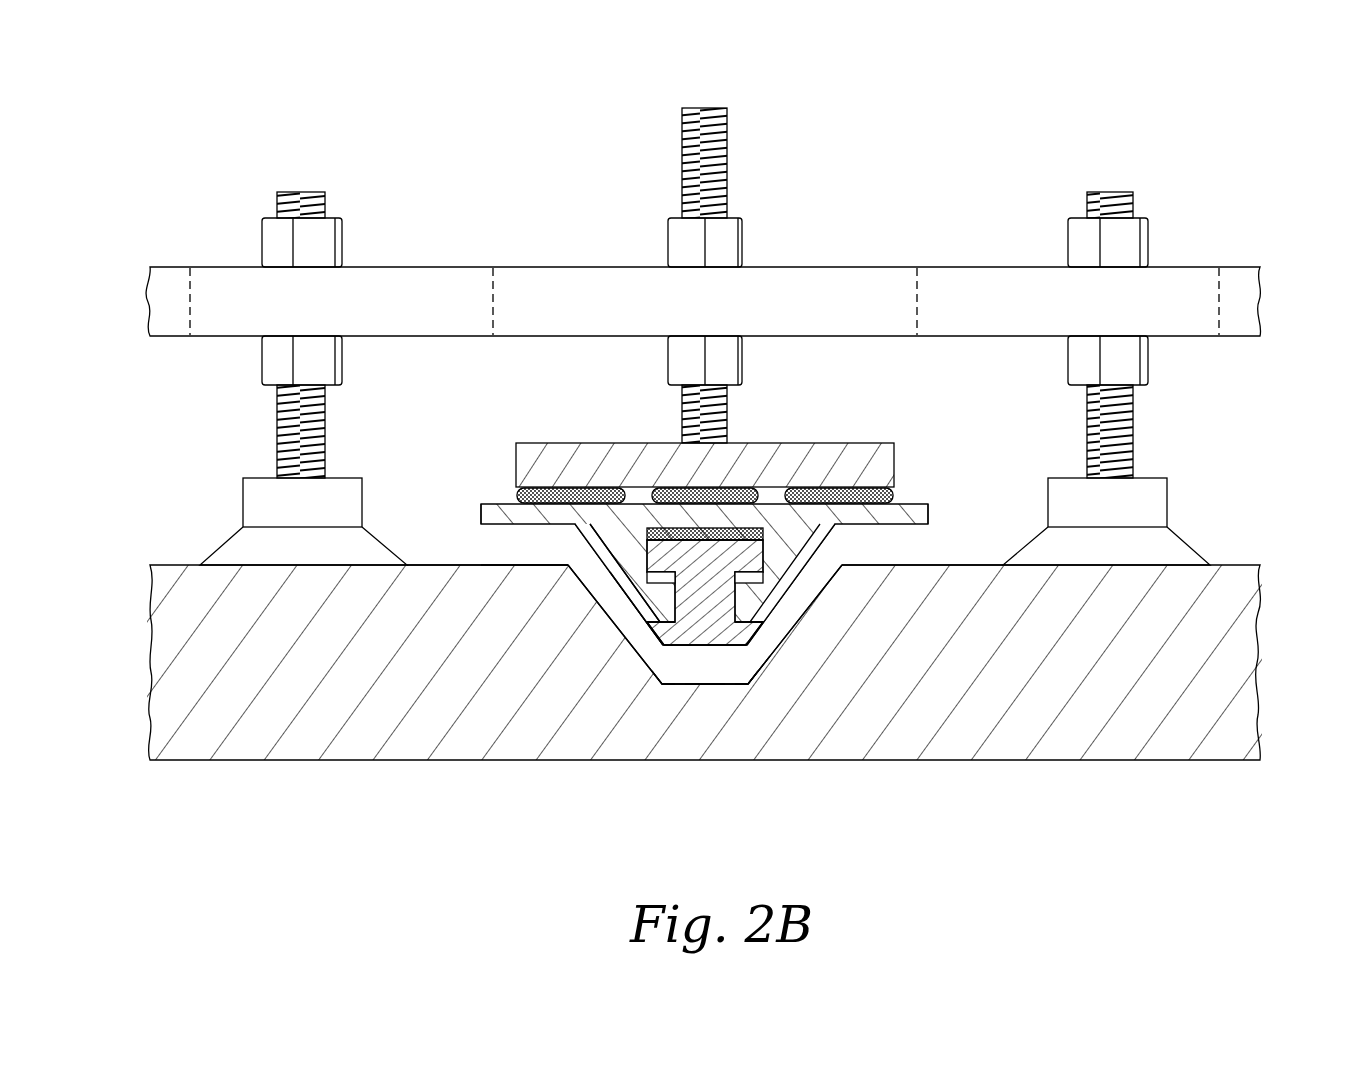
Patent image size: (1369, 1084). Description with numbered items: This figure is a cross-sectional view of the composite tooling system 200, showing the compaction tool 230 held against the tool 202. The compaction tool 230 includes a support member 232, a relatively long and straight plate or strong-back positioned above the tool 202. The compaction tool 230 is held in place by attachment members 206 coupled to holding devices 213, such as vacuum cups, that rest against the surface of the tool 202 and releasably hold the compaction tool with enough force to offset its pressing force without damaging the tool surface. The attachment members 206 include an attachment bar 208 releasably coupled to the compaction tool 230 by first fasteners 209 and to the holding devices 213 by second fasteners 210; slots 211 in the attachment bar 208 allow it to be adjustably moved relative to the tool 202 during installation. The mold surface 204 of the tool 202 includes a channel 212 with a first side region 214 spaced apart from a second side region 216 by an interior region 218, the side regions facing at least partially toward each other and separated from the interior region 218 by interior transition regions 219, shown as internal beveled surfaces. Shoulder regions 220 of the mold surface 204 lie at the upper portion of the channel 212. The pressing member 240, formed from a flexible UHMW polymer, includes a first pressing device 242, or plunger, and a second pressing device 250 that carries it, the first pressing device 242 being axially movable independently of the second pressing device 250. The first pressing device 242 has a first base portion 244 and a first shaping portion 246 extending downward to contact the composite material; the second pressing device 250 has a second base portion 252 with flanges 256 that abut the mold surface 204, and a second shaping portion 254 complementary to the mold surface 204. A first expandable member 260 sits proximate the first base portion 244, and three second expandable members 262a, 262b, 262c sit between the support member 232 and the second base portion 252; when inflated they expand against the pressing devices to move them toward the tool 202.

The composite tooling system 200 is at (1150, 98).
The tool 202 is at (1232, 642).
The mold surface 204 is at (945, 563).
The attachment members 206 is at (668, 336).
The attachment bar 208 is at (160, 308).
The first fasteners 209 is at (727, 410).
The second fasteners 210 is at (1133, 432).
The slots 211 is at (428, 268).
The channel 212 is at (729, 690).
The holding devices 213 is at (1180, 532).
The first side region 214 is at (648, 663).
The second side region 216 is at (753, 603).
The interior region 218 is at (700, 684).
The interior transition regions 219 is at (752, 690).
The shoulder regions 220 is at (850, 575).
The compaction tool 230 is at (719, 542).
The support member 232 is at (893, 457).
The pressing member 240 is at (900, 510).
The first pressing device 242 is at (710, 632).
The first base portion 244 is at (600, 597).
The first shaping portion 246 is at (757, 672).
The second pressing device 250 is at (787, 562).
The second base portion 252 is at (718, 528).
The second shaping portion 254 is at (777, 593).
The flanges 256 is at (935, 498).
The first expandable member 260 is at (483, 570).
The second expandable member 262a is at (557, 490).
The second expandable member 262b is at (657, 492).
The second expandable member 262c is at (837, 492).